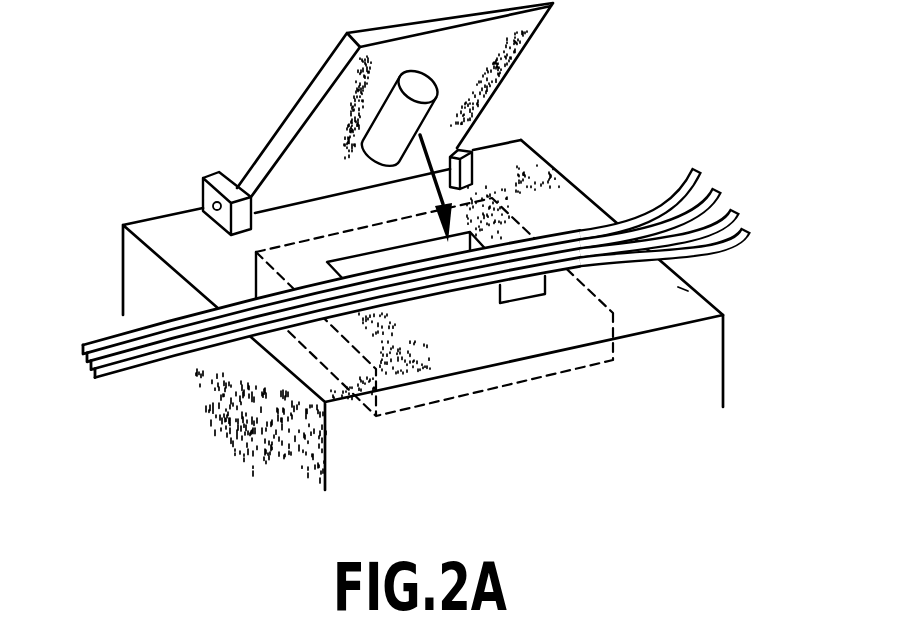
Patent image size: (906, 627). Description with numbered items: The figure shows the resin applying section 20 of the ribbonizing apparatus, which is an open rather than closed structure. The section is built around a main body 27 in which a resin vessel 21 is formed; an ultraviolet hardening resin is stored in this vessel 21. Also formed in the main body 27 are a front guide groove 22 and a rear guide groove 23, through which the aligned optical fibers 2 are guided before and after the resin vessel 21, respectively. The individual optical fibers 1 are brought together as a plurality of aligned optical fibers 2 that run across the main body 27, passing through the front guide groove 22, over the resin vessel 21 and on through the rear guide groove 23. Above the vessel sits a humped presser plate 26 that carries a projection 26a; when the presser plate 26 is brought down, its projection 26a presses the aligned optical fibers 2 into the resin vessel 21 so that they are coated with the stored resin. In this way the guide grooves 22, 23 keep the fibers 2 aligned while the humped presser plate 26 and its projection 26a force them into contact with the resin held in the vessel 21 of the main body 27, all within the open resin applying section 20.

The resin applying section 20 is at (125, 192).
The humped presser plate 26 is at (282, 128).
The projection 26a is at (472, 116).
The optical fiber 1 is at (715, 187).
The aligned optical fibers 2 is at (152, 372).
The front guide groove 22 is at (617, 224).
The rear guide groove 23 is at (229, 308).
The resin vessel 21 is at (500, 302).
The main body 27 is at (693, 284).